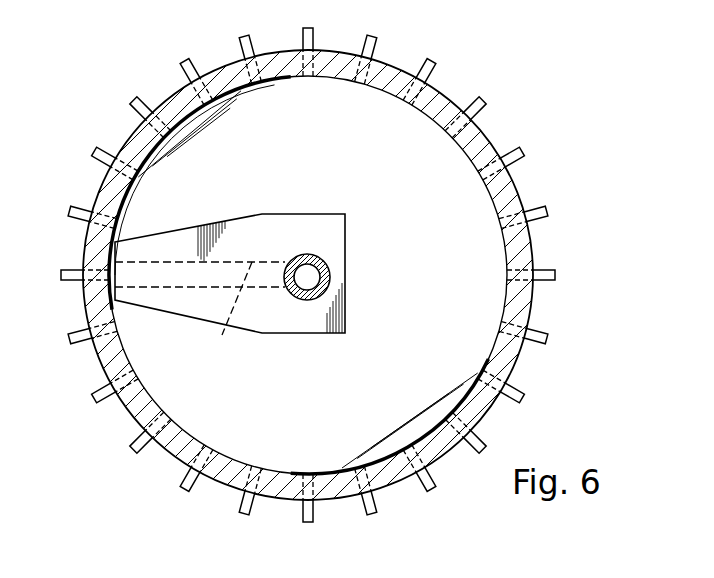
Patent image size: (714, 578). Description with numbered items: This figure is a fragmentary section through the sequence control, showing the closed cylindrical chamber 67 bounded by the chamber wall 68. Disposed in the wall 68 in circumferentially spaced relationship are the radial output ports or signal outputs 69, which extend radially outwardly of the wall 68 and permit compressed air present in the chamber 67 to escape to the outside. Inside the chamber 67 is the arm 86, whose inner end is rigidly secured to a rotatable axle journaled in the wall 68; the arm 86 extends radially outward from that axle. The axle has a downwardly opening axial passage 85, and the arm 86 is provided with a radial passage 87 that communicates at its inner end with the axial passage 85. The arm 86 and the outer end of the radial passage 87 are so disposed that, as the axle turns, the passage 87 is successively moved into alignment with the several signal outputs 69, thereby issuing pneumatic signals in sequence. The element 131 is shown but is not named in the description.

The closed cylindrical chamber 67 is at (195, 415).
The chamber wall 68 is at (336, 481).
The signal outputs 69 is at (240, 513).
The axial passage 85 is at (310, 277).
The arm 86 is at (293, 242).
The radial passage 87 is at (227, 312).
The liner strip 131 is at (108, 268).